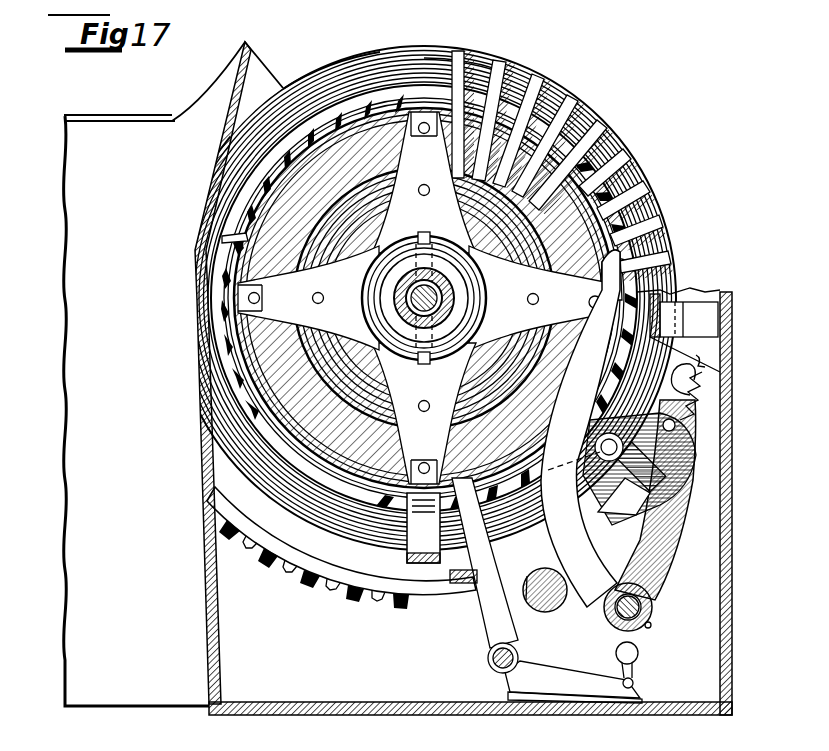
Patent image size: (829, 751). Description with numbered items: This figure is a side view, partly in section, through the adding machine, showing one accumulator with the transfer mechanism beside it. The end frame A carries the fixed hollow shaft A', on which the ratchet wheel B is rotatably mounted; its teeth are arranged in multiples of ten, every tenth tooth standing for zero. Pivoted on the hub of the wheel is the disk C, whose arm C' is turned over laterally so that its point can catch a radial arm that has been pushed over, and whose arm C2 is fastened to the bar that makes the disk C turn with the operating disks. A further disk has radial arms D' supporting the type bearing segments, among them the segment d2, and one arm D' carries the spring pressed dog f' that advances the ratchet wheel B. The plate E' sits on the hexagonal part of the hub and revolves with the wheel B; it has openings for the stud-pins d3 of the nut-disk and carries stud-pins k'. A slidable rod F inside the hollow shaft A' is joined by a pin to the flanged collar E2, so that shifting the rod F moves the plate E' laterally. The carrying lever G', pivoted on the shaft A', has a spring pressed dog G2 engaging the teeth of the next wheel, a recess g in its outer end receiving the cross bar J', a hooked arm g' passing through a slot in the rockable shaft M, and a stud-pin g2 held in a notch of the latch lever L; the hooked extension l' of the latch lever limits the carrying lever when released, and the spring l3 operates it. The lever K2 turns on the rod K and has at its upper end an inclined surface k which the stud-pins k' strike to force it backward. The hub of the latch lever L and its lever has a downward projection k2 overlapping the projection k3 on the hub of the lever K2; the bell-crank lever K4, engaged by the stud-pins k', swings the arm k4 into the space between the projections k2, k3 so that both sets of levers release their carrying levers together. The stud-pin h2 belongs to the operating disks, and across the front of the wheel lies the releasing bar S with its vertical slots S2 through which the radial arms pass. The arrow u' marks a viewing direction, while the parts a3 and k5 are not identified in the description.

The end frame A is at (366, 357).
The hollow shaft A' is at (458, 290).
The ratchet wheel B is at (372, 115).
The disk C is at (424, 274).
The arm C' is at (462, 47).
The arm C2 is at (423, 528).
The arm D' is at (386, 298).
The plate E' is at (424, 298).
The flanged collar E2 is at (492, 322).
The slidable rod F is at (456, 298).
The spring pressed dog f' is at (198, 237).
The carrying lever G' is at (650, 469).
The spring pressed dog G2 is at (600, 460).
The recess g is at (626, 496).
The hooked arm g' is at (531, 607).
The stud-pin g2 is at (676, 424).
The cross bar J' is at (663, 468).
The rod K is at (653, 607).
The lever K2 is at (580, 428).
The bell-crank lever K4 is at (487, 618).
The inclined surface k is at (562, 175).
The stud-pin k' is at (425, 298).
The projection k2 is at (652, 626).
The projection k3 is at (488, 660).
The upwardly projecting arm k4 is at (640, 655).
The link k5 is at (590, 702).
The latch lever L is at (672, 540).
The hooked extension l' is at (712, 382).
The spring l3 is at (705, 372).
The rockable shaft M is at (552, 610).
The releasing bar S is at (733, 322).
The vertical slot S2 is at (685, 333).
The hole a3 is at (452, 204).
The type bearing segment d2 is at (308, 300).
The stud-pin d3 is at (422, 397).
The stud-pin h2 is at (407, 556).
The arrow u' is at (353, 49).